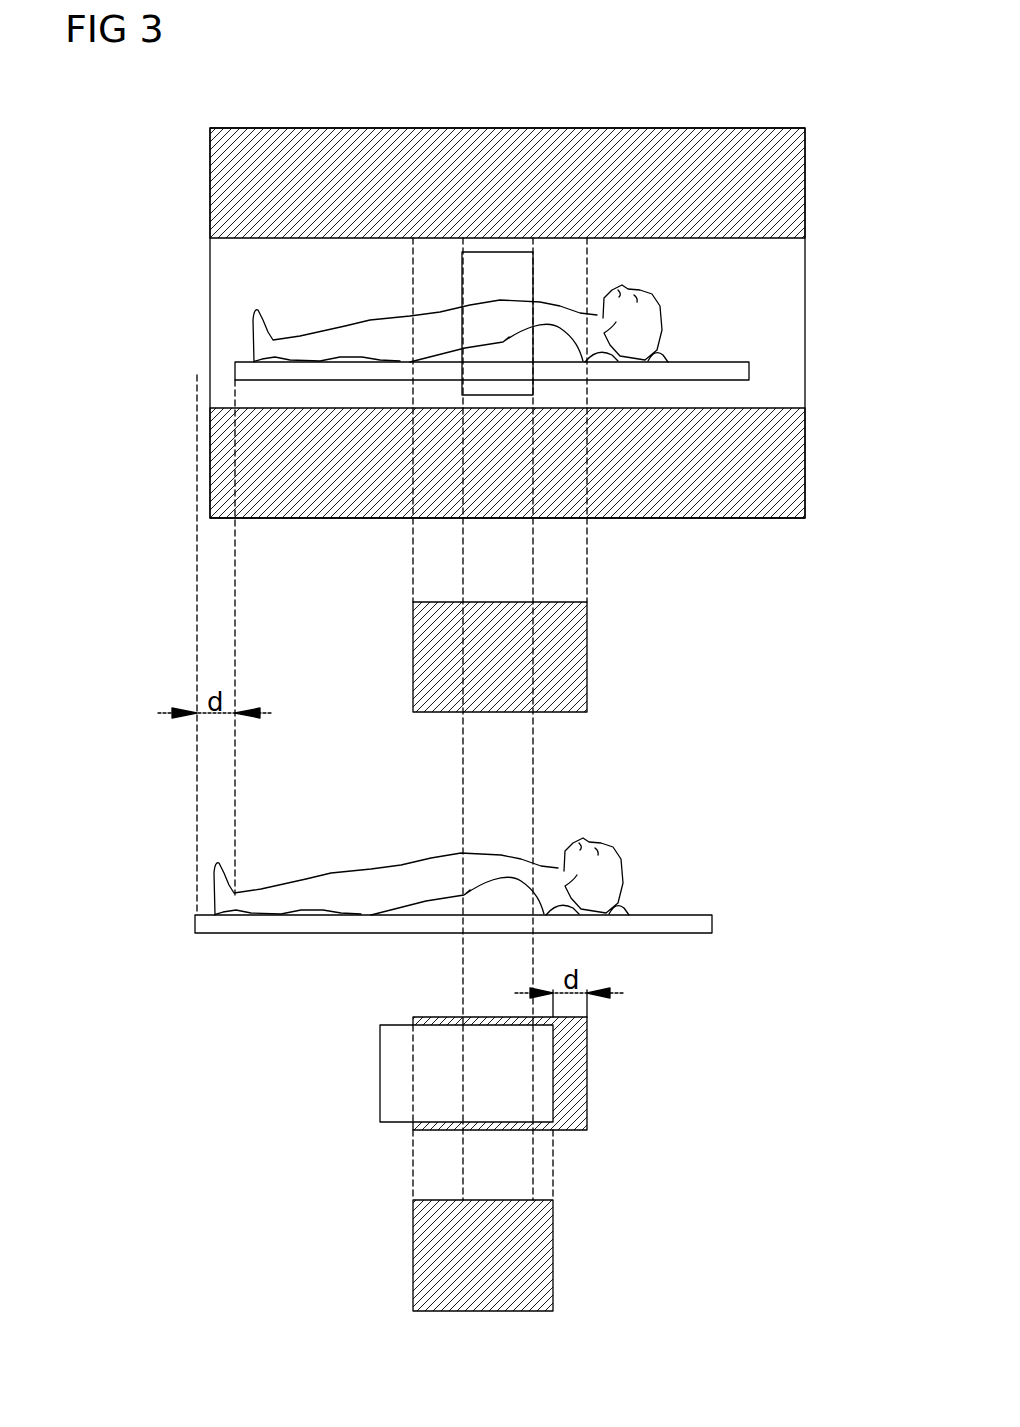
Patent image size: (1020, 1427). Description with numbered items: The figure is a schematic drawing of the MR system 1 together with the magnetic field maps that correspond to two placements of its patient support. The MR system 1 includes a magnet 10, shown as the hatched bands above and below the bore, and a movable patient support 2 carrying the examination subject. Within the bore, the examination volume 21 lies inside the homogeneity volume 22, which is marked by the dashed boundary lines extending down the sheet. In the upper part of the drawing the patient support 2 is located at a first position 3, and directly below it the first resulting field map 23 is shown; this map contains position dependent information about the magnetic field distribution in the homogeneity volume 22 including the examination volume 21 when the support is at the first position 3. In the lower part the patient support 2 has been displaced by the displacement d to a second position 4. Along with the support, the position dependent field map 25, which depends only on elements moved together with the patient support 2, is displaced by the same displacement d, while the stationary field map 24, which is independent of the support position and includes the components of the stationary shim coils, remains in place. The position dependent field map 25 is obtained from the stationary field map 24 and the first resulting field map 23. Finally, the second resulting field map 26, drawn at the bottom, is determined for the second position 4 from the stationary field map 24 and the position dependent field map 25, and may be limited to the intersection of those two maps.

The MR system 1 is at (750, 98).
The magnet 10 is at (500, 148).
The movable patient support 2 is at (235, 370).
The first position 3 is at (153, 316).
The second position 4 is at (158, 868).
The examination volume 21 is at (462, 283).
The homogeneity volume 22 is at (587, 282).
The first resulting field map 23 is at (575, 660).
The stationary field map 24 is at (582, 1075).
The position dependent field map 25 is at (390, 1075).
The second resulting field map 26 is at (545, 1260).